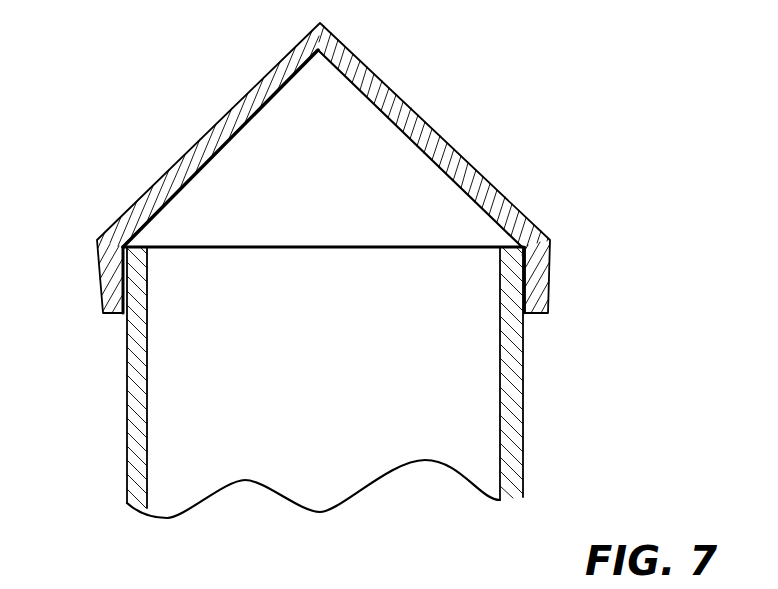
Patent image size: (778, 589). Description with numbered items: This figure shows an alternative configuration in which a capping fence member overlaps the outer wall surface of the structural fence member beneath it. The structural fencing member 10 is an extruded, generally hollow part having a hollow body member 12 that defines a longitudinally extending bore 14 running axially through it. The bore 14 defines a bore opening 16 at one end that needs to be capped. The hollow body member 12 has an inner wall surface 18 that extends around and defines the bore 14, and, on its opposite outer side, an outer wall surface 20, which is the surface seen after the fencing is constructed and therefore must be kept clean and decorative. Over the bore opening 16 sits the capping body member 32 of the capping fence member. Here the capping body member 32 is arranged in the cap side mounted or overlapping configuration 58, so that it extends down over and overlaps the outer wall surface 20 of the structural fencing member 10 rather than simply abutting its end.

The structural fencing member 10 is at (524, 443).
The hollow body member 12 is at (133, 398).
The longitudinally extending bore 14 is at (285, 385).
The bore opening 16 is at (353, 250).
The inner wall surface 18 is at (500, 385).
The outer wall surface 20 is at (524, 353).
The capping body member 32 is at (372, 68).
The cap side mounted or overlapping configuration 58 is at (485, 177).